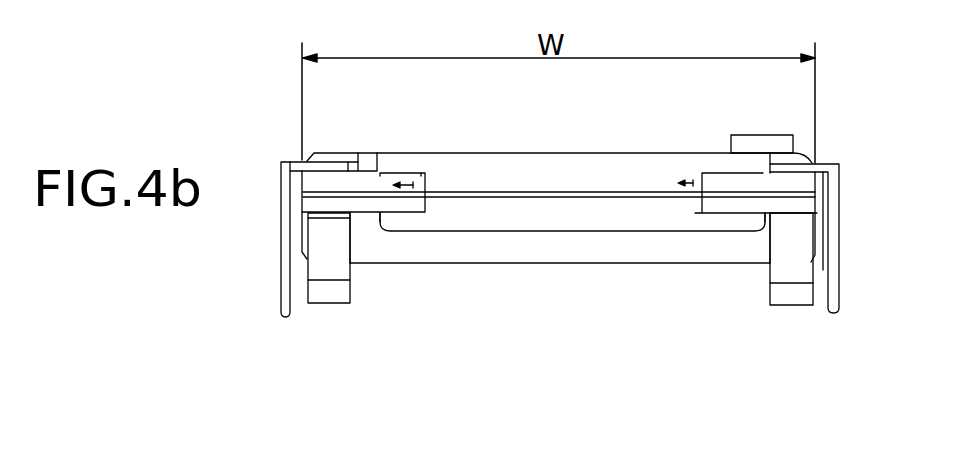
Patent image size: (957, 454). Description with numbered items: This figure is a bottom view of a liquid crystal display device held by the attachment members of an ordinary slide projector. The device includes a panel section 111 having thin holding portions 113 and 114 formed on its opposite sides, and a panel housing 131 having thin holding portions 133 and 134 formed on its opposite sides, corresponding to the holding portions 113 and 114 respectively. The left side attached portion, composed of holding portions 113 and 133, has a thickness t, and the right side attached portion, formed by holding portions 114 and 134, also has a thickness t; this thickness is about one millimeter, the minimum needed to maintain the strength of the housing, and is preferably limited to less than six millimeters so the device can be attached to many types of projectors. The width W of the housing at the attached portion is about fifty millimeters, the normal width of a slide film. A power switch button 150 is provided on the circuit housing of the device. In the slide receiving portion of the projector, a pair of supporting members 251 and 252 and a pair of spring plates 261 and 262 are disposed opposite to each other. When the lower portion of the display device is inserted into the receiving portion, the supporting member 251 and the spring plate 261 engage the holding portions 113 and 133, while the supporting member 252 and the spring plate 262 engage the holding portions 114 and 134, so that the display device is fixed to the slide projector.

The panel section 111 is at (591, 172).
The holding portion 113 is at (362, 153).
The holding portion 114 is at (770, 173).
The panel housing 131 is at (594, 238).
The holding portion 133 is at (361, 213).
The holding portion 134 is at (780, 213).
The power switch button 150 is at (758, 148).
The supporting member 251 is at (290, 160).
The supporting member 252 is at (829, 164).
The spring plate 261 is at (332, 268).
The spring plate 262 is at (787, 280).